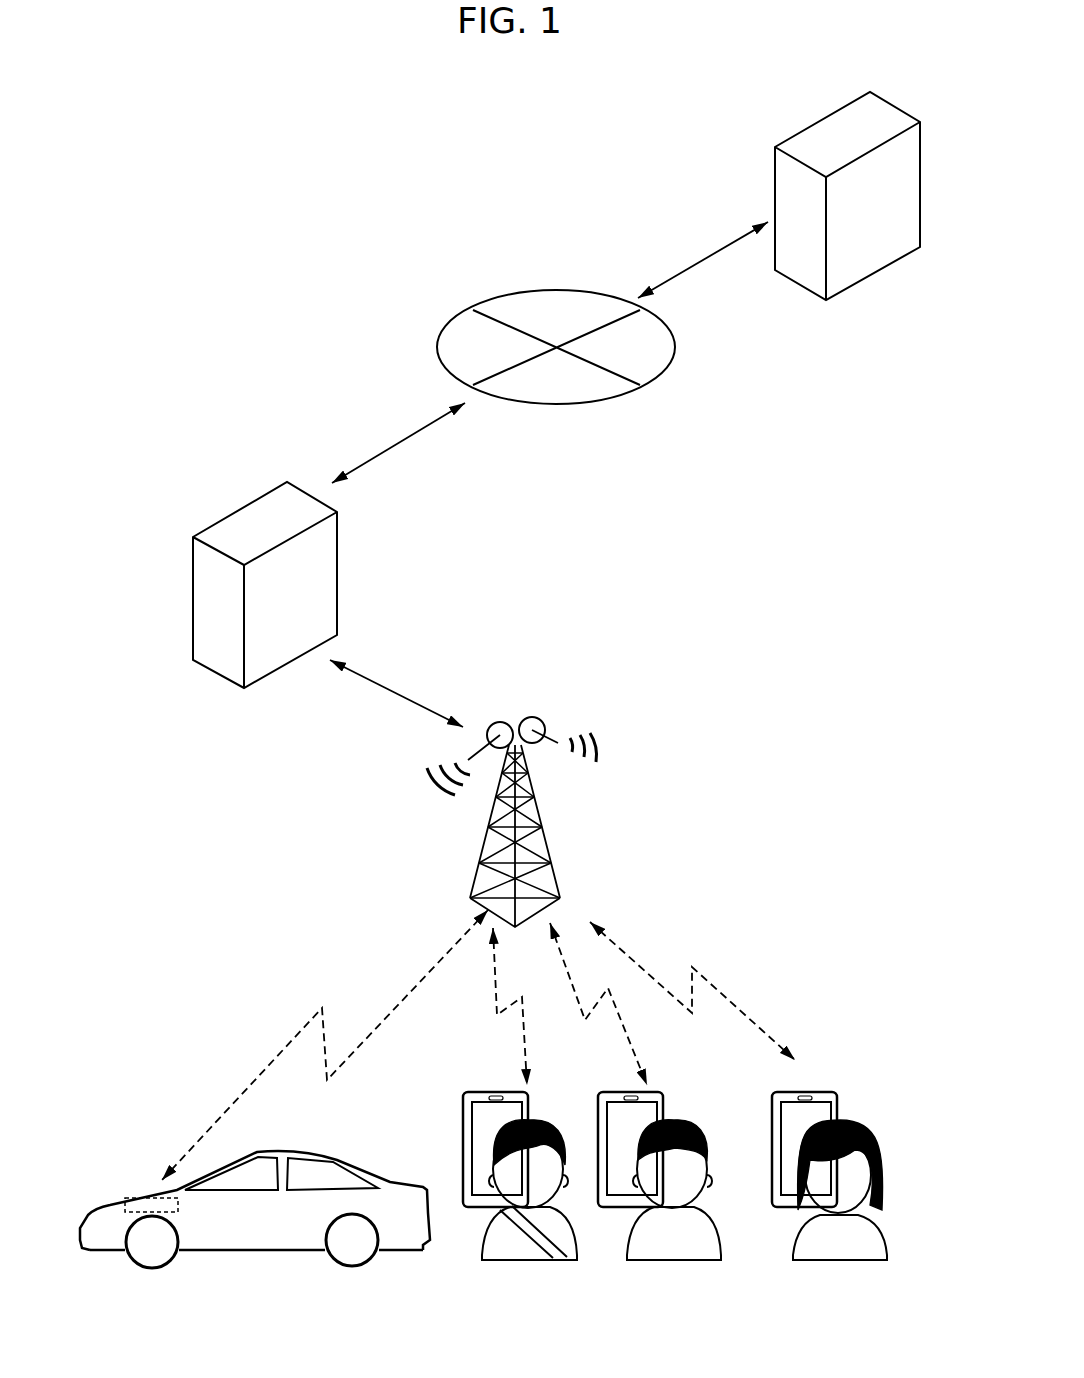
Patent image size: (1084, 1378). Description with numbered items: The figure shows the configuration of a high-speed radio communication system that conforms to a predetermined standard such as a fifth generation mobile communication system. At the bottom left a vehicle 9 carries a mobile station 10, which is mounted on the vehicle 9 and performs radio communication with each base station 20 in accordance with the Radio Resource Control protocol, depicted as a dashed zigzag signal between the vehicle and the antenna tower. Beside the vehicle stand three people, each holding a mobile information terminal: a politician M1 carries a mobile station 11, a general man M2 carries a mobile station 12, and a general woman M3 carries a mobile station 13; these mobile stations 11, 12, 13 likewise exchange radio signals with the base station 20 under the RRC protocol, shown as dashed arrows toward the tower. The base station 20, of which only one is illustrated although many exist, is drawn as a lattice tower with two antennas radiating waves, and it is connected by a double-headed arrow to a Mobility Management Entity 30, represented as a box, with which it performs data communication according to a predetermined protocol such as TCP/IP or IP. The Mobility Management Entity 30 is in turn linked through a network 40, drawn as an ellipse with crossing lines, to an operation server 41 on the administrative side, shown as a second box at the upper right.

The vehicle 9 is at (336, 1157).
The mobile station 10 is at (150, 1195).
The mobile station 11 is at (482, 1092).
The mobile station 12 is at (603, 1092).
The mobile station 13 is at (815, 1092).
The base station 20 is at (530, 717).
The Mobility Management Entity 30 is at (238, 510).
The network 40 is at (556, 292).
The operation server 41 is at (818, 121).
The politician M1 is at (517, 1262).
The general man M2 is at (671, 1262).
The general woman M3 is at (842, 1262).